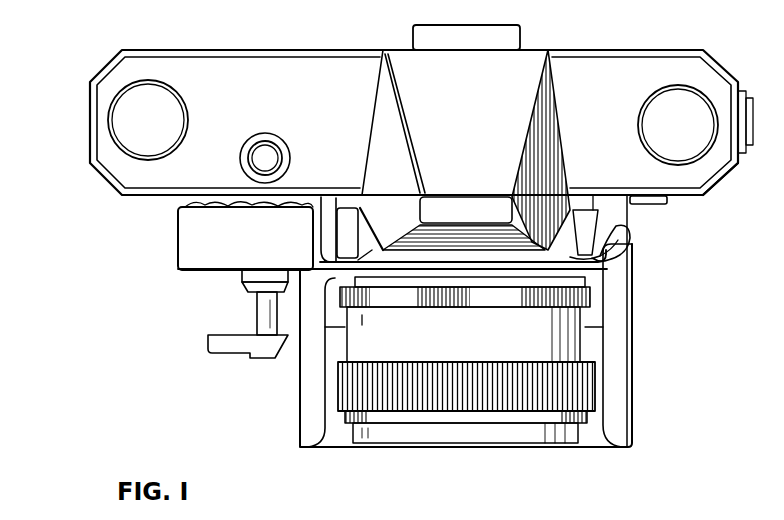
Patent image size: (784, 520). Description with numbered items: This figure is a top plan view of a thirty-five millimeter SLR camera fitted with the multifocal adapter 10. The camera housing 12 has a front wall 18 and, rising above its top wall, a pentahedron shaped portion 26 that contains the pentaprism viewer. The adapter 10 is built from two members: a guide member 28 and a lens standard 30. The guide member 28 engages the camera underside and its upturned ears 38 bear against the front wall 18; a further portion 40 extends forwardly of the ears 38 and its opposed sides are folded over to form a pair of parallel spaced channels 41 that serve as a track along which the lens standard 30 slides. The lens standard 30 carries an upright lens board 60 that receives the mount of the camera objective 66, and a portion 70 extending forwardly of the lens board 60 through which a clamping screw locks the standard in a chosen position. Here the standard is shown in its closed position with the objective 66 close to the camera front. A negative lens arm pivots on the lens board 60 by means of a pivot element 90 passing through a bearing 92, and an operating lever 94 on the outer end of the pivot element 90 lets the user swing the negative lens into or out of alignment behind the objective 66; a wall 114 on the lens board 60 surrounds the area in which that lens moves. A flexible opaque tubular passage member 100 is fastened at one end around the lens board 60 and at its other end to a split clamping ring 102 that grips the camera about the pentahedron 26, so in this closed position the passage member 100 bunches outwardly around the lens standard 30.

The adapter 10 is at (193, 326).
The housing 12 is at (96, 181).
The front side or wall 18 is at (717, 176).
The pentahedron shaped portion 26 is at (450, 161).
The guide member 28 is at (635, 325).
The lens standard 30 is at (178, 240).
The upturned ears 38 is at (667, 203).
The further portion 40 is at (593, 440).
The channels 41 is at (300, 421).
The upright portion or lens board 60 is at (500, 268).
The objective 66 is at (455, 435).
The portion 70 is at (598, 288).
The pivot element 90 is at (258, 312).
The bearing 92 is at (242, 280).
The operating lever 94 is at (230, 347).
The tubular passage member 100 is at (612, 250).
The split clamping ring 102 is at (592, 222).
The wall 114 is at (233, 245).